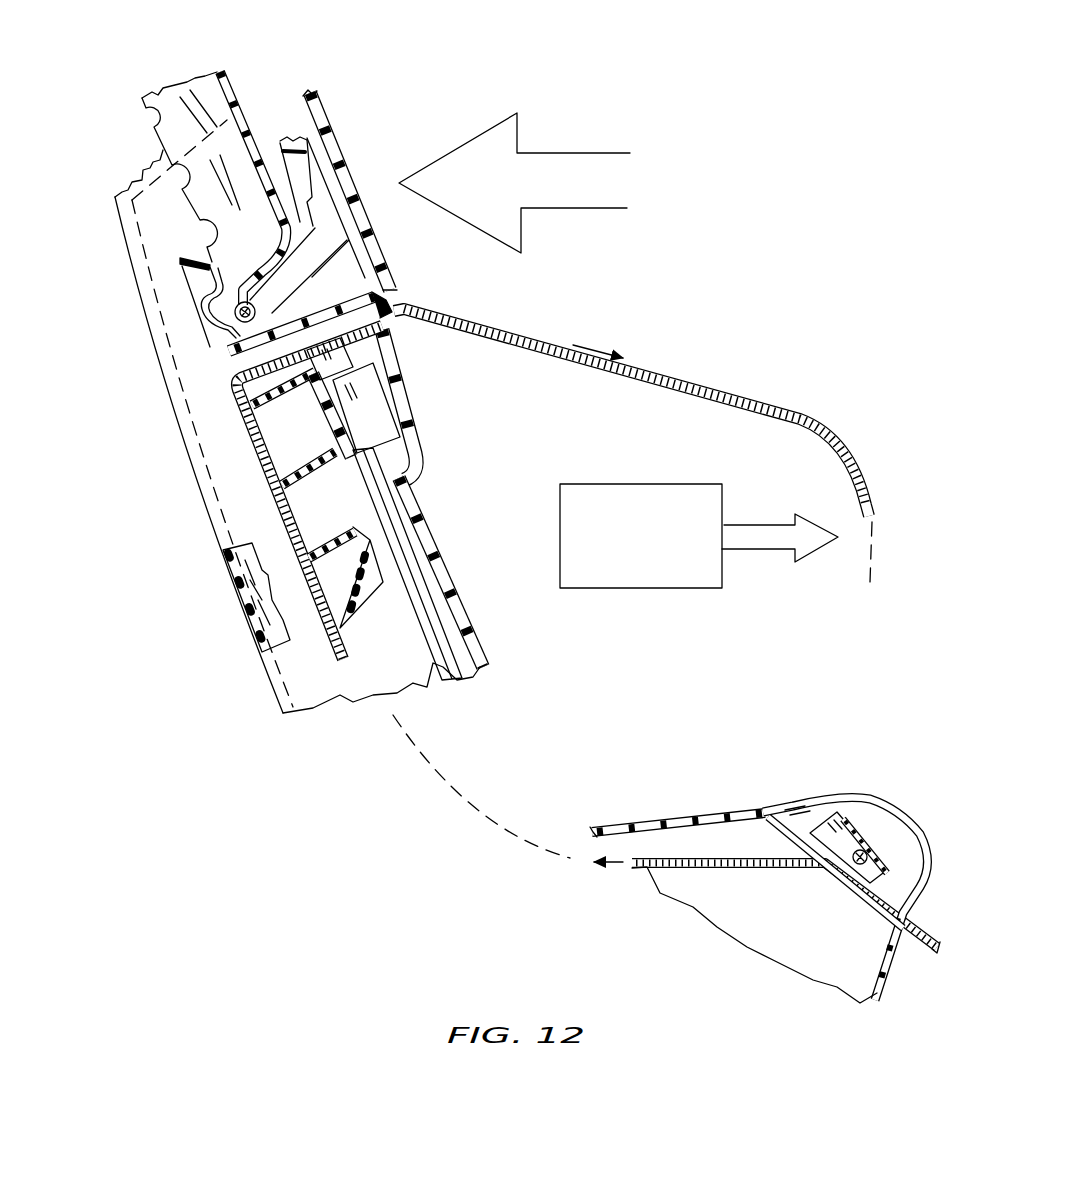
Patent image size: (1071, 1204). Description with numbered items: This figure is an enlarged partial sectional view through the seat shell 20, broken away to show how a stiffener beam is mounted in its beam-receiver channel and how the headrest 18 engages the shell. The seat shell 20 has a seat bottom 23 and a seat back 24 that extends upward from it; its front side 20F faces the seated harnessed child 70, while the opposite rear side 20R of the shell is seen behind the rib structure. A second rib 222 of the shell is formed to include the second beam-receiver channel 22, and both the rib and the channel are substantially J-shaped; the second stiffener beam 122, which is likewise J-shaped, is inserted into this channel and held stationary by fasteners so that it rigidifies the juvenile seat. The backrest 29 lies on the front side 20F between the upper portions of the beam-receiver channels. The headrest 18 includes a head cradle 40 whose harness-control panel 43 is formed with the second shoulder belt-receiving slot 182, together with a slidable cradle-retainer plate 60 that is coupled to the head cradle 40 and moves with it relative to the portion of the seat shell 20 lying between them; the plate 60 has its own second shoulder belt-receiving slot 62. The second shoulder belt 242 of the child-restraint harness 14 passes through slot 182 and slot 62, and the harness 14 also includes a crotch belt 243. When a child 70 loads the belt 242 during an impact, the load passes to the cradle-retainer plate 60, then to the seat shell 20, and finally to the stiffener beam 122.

The seat shell 20 is at (228, 82).
The rear shell portion 20R is at (113, 163).
The front side of seat shell 20F is at (264, 86).
The backrest 29 is at (248, 125).
The head cradle 40 is at (333, 120).
The headrest 18 is at (352, 152).
The harness-control panel 43 is at (348, 183).
The second shoulder belt-receiving slot 182 is at (374, 300).
The second shoulder belt 242 is at (462, 314).
The child-restraint harness 14 is at (683, 386).
The child 70 is at (598, 483).
The second shoulder belt-receiving slot 62 is at (232, 354).
The second rib 222 is at (178, 440).
The second beam-receiver channel 22 is at (227, 461).
The second stiffener beam 122 is at (268, 606).
The slidable cradle-retainer plate 60 is at (358, 607).
The seat back 24 is at (442, 550).
The seat bottom 23 is at (736, 808).
The crotch belt 243 is at (910, 822).